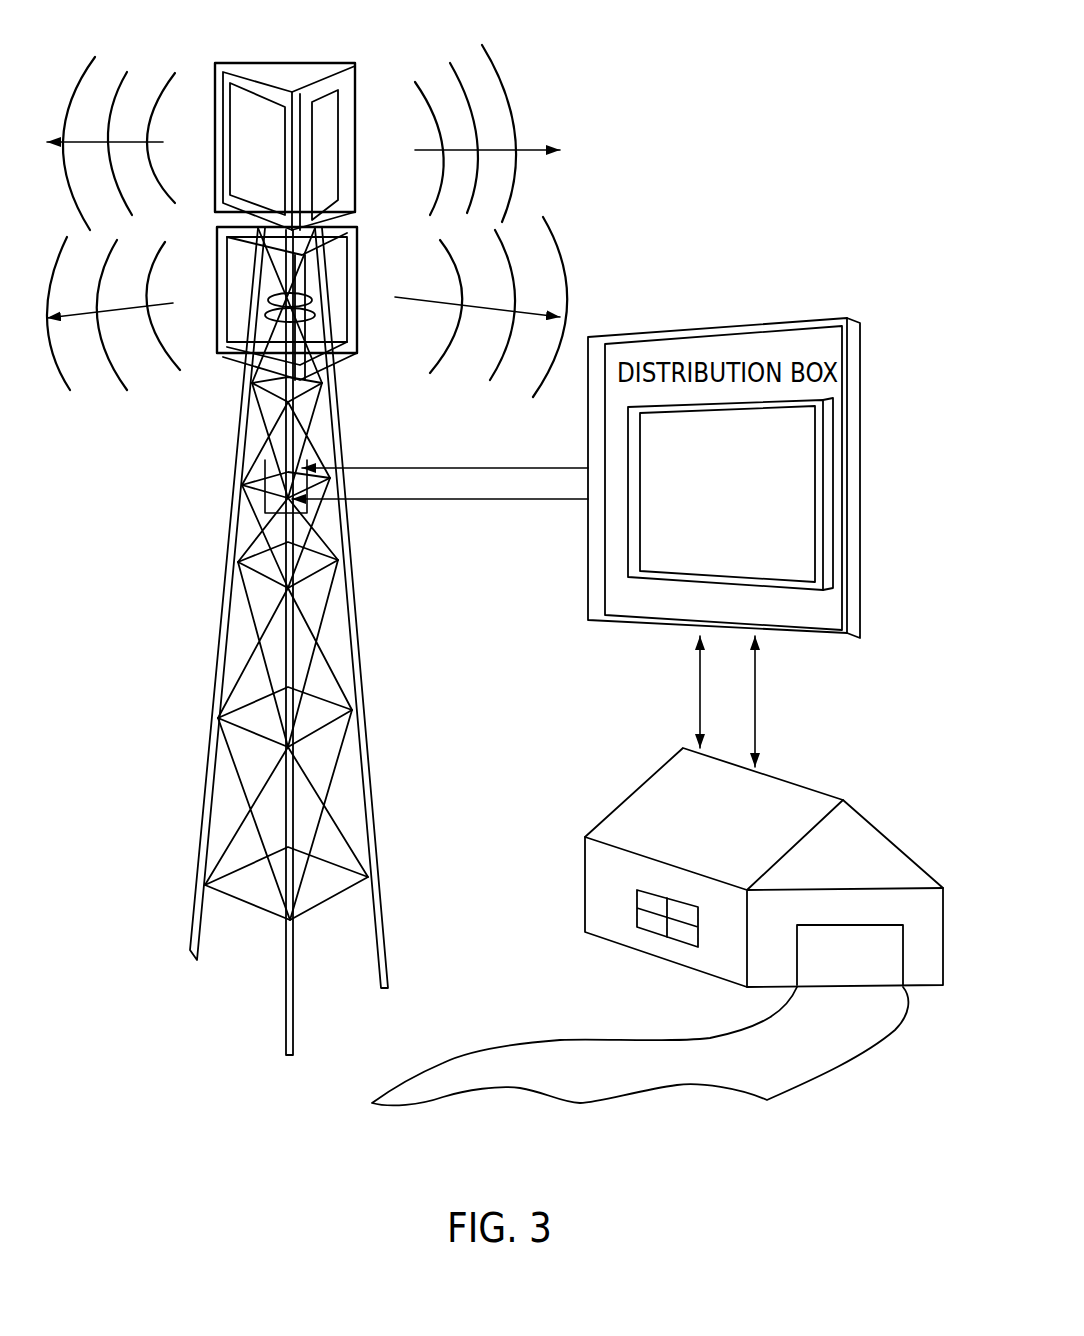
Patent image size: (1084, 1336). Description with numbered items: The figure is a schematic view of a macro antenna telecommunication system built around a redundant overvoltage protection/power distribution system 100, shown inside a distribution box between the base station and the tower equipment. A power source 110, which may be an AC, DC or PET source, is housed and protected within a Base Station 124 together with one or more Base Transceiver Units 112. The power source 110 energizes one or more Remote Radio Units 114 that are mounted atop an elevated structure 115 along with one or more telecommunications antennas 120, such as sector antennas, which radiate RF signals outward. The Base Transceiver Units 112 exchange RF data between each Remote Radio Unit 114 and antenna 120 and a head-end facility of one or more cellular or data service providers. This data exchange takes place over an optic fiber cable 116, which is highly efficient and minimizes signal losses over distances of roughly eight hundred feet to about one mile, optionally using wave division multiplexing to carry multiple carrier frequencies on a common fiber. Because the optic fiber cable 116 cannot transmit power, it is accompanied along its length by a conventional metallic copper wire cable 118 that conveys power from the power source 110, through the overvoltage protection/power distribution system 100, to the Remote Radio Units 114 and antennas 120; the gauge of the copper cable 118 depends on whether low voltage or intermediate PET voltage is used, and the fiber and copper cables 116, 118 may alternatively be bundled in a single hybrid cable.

The overvoltage protection/power distribution system 100 is at (830, 418).
The power source 110 is at (635, 822).
The Base Transceiver Units 112 is at (810, 795).
The Remote Radio Unit 114 is at (263, 463).
The elevated structure 115 is at (338, 428).
The optic fiber cable 116 is at (756, 684).
The copper wire cable 118 is at (698, 717).
The telecommunications antennas 120 is at (357, 97).
The Base Station 124 is at (893, 838).